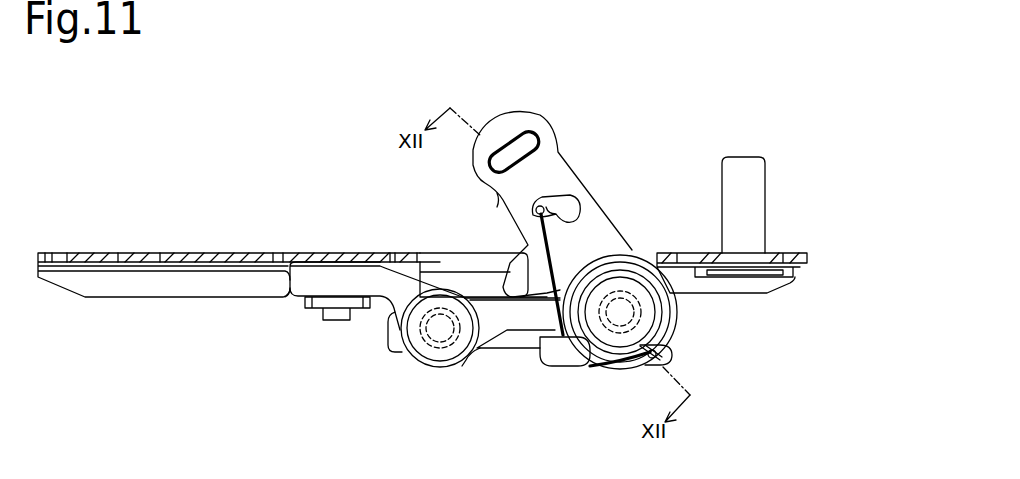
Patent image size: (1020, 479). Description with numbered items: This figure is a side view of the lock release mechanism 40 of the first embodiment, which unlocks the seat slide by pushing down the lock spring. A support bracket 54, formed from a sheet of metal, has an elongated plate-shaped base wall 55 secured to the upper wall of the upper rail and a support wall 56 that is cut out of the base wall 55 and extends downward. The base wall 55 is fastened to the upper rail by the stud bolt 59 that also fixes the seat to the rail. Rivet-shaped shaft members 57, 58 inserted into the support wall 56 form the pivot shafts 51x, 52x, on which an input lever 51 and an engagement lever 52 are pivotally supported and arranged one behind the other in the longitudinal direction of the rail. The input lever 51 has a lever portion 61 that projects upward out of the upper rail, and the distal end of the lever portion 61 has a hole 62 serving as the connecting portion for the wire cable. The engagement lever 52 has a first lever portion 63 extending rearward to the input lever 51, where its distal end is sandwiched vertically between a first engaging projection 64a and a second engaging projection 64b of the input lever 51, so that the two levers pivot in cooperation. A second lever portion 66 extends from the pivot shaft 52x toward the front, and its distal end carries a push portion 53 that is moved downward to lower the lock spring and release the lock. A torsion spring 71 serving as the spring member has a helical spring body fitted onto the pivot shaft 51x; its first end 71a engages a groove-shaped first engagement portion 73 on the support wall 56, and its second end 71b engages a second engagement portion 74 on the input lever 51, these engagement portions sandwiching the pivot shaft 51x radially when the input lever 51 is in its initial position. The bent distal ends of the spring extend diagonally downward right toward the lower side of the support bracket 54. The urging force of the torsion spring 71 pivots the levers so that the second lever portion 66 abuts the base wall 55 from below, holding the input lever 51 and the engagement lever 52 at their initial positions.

The lock release mechanism 40 is at (88, 106).
The input lever 51 is at (553, 128).
The pivot shaft 51x is at (612, 275).
The engagement lever 52 is at (545, 322).
The pivot shaft 52x is at (430, 364).
The push portion 53 is at (313, 315).
The support bracket 54 is at (88, 250).
The base wall 55 is at (200, 258).
The support wall 56 is at (450, 249).
The shaft member 57 is at (650, 255).
The shaft member 58 is at (398, 348).
The stud bolt 59 is at (745, 157).
The lever portion 61 is at (495, 137).
The hole 62 is at (527, 135).
The first lever portion 63 is at (512, 352).
The first engaging projection 64a is at (568, 360).
The second engaging projection 64b is at (482, 278).
The second lever portion 66 is at (293, 262).
The torsion spring 71 is at (677, 318).
The first end 71a is at (672, 356).
The second end 71b is at (575, 210).
The first engagement portion 73 is at (640, 368).
The second engagement portion 74 is at (558, 196).